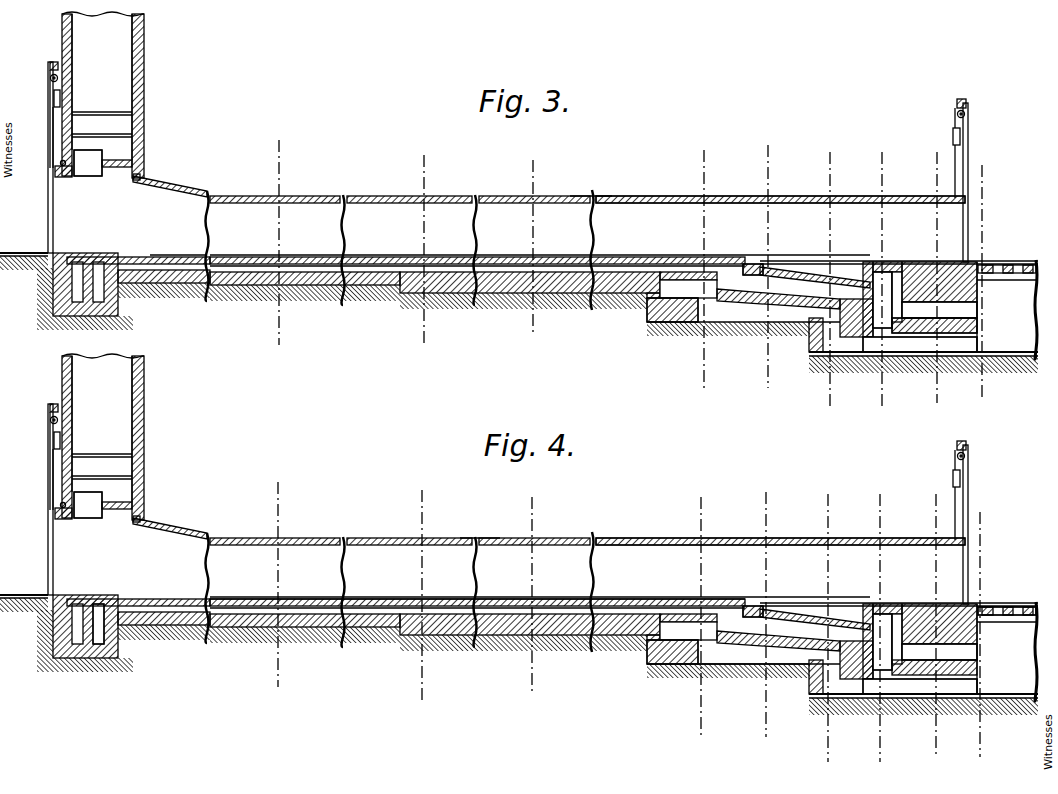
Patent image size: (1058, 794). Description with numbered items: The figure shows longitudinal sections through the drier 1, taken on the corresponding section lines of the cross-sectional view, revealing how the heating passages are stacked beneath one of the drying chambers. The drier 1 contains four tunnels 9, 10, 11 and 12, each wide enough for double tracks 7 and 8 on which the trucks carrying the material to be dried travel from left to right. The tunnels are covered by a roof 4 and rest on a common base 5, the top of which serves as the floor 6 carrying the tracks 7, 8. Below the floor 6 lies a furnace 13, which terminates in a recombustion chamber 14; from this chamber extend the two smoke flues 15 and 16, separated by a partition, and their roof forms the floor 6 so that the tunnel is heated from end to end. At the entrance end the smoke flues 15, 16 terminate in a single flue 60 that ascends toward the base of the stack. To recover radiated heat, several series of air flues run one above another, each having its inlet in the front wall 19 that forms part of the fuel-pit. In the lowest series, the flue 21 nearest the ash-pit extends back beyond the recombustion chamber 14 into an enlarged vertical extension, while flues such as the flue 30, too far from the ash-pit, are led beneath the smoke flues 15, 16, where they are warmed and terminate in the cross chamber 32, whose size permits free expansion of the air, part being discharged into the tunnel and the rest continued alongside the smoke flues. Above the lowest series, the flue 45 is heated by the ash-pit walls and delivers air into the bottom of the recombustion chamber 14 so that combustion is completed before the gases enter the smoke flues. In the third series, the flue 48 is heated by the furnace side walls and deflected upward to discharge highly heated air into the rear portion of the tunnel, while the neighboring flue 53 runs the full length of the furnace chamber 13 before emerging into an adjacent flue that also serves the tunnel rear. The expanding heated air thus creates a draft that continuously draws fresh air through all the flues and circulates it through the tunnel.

In FIG. 3, the drier 1 is at (662, 192).
In FIG. 4, the drier 1 is at (780, 528).
In FIG. 3, the roof 4 is at (591, 197).
In FIG. 4, the roof 4 is at (480, 526).
In FIG. 3, the base 5 is at (494, 315).
In FIG. 4, the base 5 is at (771, 636).
In FIG. 3, the floor 6 is at (505, 263).
In FIG. 4, the floor 6 is at (749, 627).
In FIG. 3, the track 7 is at (879, 277).
In FIG. 4, the track 7 is at (879, 629).
In FIG. 3, the track 8 is at (445, 263).
In FIG. 4, the track 8 is at (667, 630).
In FIG. 3, the drying tunnel 9 is at (764, 265).
In FIG. 4, the drying tunnel 9 is at (765, 617).
In FIG. 3, the drying tunnel 10 is at (462, 205).
In FIG. 4, the drying tunnel 10 is at (695, 620).
In FIG. 3, the drying tunnel 11 is at (513, 245).
In FIG. 4, the drying tunnel 11 is at (513, 603).
In FIG. 3, the drying tunnel 12 is at (402, 249).
In FIG. 4, the drying tunnel 12 is at (401, 597).
In FIG. 3, the furnace 13 is at (275, 242).
In FIG. 4, the furnace 13 is at (278, 587).
In FIG. 3, the recombustion chamber 14 is at (165, 212).
In FIG. 4, the recombustion chamber 14 is at (483, 598).
In FIG. 3, the smoke flue 15 is at (86, 170).
In FIG. 4, the smoke flue 15 is at (93, 560).
In FIG. 4, the smoke flue 16 is at (486, 598).
In FIG. 3, the front wall 19 is at (205, 241).
In FIG. 4, the front wall 19 is at (598, 596).
In FIG. 3, the air flue 21 is at (960, 340).
In FIG. 4, the air flue 30 is at (837, 700).
In FIG. 3, the cross chamber 32 is at (642, 306).
In FIG. 4, the cross chamber 32 is at (640, 666).
In FIG. 3, the air flue 45 is at (978, 325).
In FIG. 3, the air flue 48 is at (895, 271).
In FIG. 4, the air flue 53 is at (965, 641).
In FIG. 4, the single flue 60 is at (100, 657).